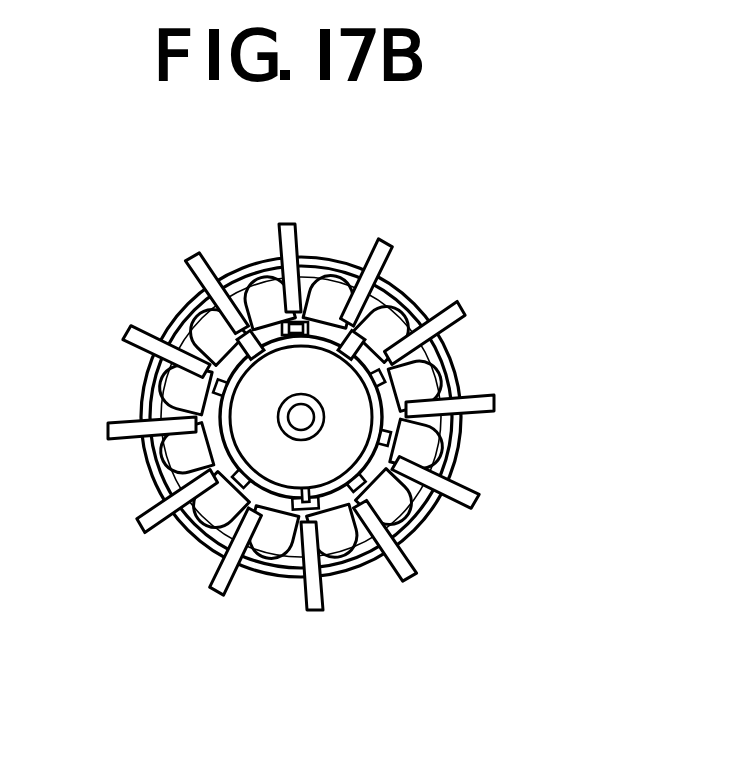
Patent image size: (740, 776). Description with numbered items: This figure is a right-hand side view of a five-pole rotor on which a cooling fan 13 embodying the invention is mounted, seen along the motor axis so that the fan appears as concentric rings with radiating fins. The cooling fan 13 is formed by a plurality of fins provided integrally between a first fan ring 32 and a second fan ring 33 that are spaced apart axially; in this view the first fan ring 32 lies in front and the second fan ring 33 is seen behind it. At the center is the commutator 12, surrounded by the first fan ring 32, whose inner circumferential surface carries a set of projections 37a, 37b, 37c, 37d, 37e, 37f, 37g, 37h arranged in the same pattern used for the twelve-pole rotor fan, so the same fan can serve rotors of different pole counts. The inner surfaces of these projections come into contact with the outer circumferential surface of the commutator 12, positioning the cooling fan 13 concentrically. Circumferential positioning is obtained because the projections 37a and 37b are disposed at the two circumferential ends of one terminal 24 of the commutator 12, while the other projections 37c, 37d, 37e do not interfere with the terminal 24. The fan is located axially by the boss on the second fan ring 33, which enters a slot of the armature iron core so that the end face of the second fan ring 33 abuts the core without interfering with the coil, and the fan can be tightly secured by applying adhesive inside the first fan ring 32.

The commutator 12 is at (208, 515).
The cooling fan 13 is at (303, 318).
The terminal 24 is at (325, 283).
The first fan ring 32 is at (160, 382).
The second fan ring 33 is at (203, 520).
The projection 37a is at (362, 285).
The projection 37b is at (243, 278).
The projection 37c is at (425, 338).
The projection 37d is at (433, 437).
The projection 37e is at (330, 505).
The projection 37f is at (282, 508).
The projection 37g is at (175, 462).
The projection 37h is at (188, 328).